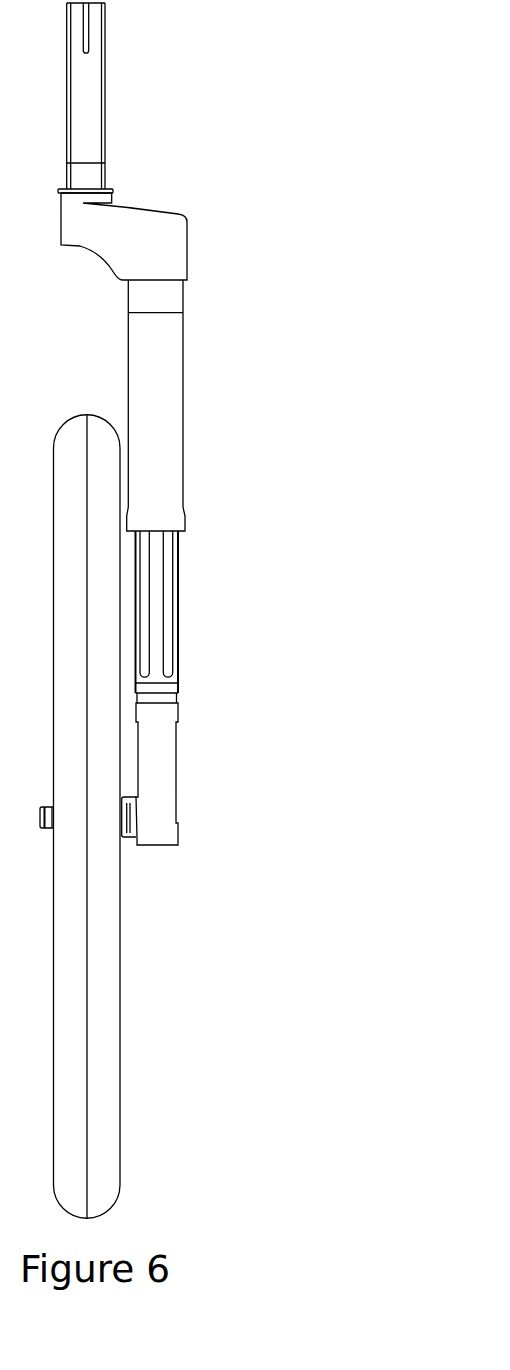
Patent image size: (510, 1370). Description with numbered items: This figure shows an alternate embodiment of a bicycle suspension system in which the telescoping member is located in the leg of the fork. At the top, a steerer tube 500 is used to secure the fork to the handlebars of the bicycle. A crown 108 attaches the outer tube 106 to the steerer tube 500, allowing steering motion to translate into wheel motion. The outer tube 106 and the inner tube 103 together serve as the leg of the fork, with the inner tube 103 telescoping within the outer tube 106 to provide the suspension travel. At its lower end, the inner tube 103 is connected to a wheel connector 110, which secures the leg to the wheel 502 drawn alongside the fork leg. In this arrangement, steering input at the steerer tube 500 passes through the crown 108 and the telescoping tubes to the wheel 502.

The steerer tube 500 is at (104, 173).
The crown 108 is at (197, 237).
The outer tube 106 is at (193, 410).
The inner tube 103 is at (193, 619).
The wheel connector 110 is at (192, 766).
The wheel 502 is at (137, 1051).